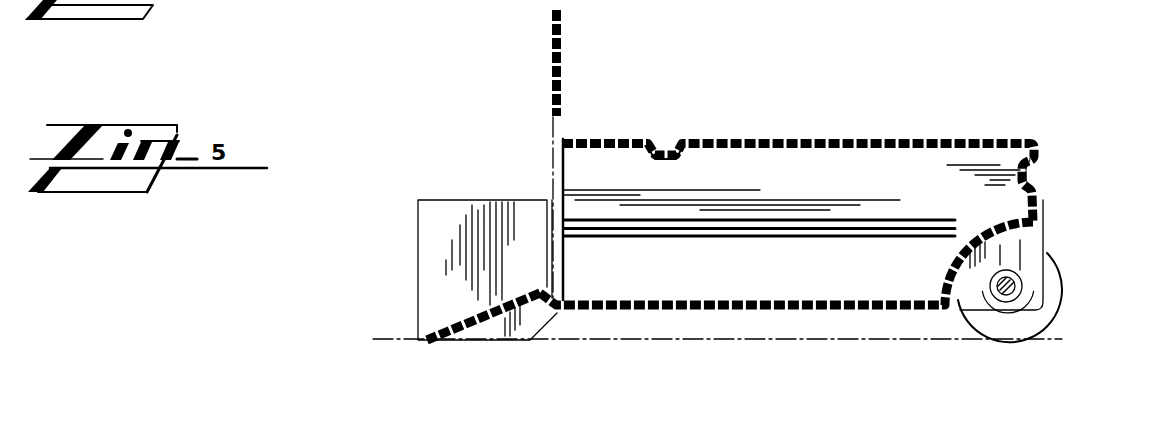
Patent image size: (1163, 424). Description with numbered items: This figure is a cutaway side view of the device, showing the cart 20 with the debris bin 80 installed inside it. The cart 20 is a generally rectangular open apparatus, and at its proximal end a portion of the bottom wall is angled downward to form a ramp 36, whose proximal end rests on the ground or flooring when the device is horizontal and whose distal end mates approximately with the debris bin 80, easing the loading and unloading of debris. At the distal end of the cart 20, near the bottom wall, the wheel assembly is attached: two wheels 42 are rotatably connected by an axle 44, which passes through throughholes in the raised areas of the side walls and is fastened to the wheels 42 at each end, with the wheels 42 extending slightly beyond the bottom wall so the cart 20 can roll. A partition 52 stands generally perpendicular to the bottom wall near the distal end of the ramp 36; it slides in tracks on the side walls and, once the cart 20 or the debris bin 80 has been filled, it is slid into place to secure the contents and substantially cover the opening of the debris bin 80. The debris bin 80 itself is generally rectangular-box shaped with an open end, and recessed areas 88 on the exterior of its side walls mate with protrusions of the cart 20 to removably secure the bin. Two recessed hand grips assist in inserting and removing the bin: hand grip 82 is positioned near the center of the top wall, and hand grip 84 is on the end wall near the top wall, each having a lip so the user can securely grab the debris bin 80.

The cart 20 is at (704, 318).
The ramp 36 is at (463, 338).
The wheels 42 is at (1050, 297).
The axle 44 is at (1013, 283).
The partition 52 is at (553, 57).
The debris bin 80 is at (885, 115).
The hand grip 82 is at (667, 140).
The hand grip 84 is at (1033, 172).
The recessed areas 88 is at (773, 230).